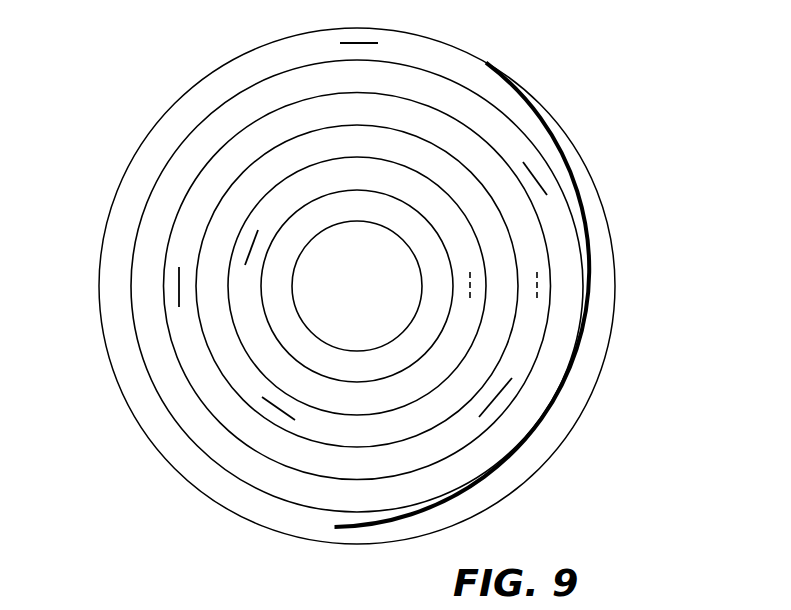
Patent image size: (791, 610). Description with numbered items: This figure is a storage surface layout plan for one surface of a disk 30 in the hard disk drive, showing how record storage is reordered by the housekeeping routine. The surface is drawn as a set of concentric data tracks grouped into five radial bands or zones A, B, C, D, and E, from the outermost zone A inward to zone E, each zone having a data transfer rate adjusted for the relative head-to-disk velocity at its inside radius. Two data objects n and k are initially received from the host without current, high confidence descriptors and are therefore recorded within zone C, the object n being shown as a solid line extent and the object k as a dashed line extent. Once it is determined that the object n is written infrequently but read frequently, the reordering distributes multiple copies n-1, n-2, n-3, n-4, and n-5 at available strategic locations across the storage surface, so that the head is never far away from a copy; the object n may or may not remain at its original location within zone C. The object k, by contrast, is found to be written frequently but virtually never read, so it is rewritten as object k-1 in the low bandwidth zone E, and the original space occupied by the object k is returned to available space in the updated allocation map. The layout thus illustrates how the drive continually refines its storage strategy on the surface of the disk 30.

The disk 30 is at (128, 408).
The zone A is at (155, 148).
The zone B is at (142, 308).
The zone C is at (297, 457).
The zone D is at (437, 412).
The zone E is at (467, 327).
The data object n is at (177, 277).
The copy n-1 of object n n-1 is at (368, 43).
The copy n-2 of object n n-2 is at (537, 175).
The copy n-3 of object n n-3 is at (493, 397).
The copy n-4 of object n n-4 is at (275, 412).
The copy n-5 of object n n-5 is at (250, 247).
The data object k is at (537, 287).
The rewritten object k-1 is at (470, 273).